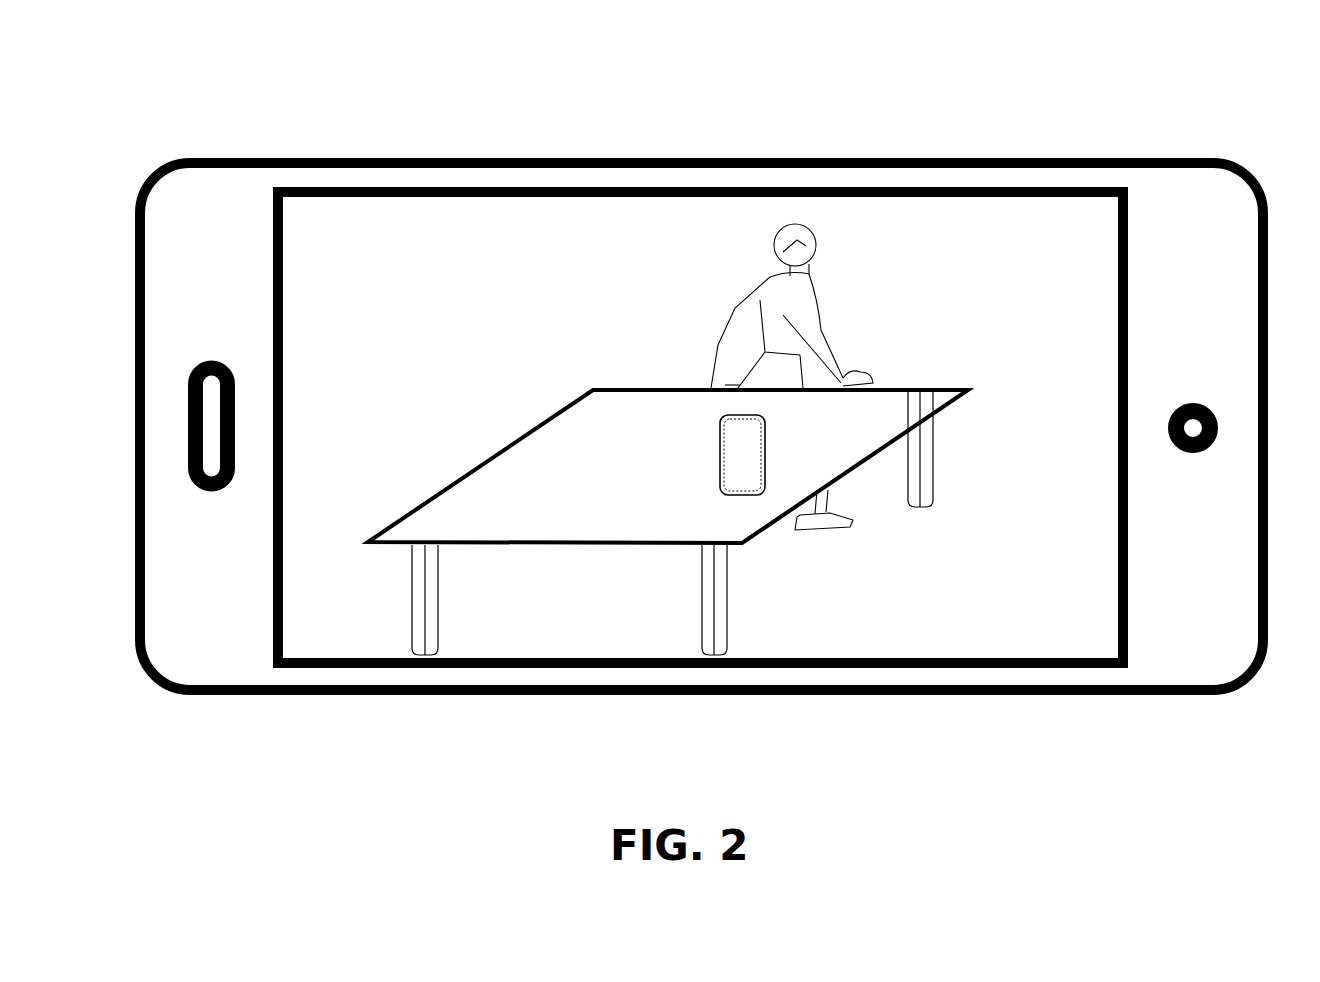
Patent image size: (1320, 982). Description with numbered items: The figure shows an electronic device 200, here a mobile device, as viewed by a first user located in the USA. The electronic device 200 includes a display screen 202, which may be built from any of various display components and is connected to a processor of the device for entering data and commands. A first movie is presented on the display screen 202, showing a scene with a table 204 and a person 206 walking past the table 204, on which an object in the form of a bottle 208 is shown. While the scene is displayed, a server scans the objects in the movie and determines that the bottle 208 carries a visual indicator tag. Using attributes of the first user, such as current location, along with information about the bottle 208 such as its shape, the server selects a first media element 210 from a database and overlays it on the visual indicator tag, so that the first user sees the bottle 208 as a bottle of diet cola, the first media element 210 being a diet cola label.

The electronic device 200 is at (683, 42).
The display screen 202 is at (341, 175).
The table 204 is at (553, 437).
The person 206 is at (731, 328).
The bottle 208 is at (728, 417).
The first media element 210 is at (735, 480).